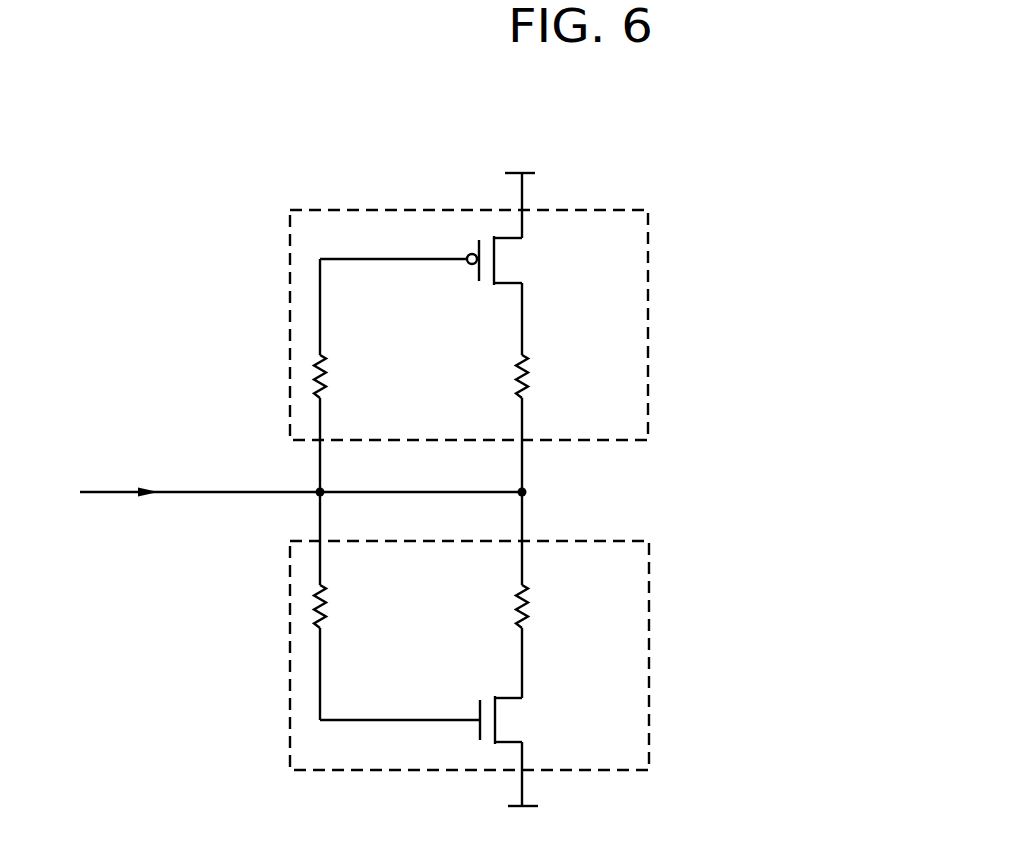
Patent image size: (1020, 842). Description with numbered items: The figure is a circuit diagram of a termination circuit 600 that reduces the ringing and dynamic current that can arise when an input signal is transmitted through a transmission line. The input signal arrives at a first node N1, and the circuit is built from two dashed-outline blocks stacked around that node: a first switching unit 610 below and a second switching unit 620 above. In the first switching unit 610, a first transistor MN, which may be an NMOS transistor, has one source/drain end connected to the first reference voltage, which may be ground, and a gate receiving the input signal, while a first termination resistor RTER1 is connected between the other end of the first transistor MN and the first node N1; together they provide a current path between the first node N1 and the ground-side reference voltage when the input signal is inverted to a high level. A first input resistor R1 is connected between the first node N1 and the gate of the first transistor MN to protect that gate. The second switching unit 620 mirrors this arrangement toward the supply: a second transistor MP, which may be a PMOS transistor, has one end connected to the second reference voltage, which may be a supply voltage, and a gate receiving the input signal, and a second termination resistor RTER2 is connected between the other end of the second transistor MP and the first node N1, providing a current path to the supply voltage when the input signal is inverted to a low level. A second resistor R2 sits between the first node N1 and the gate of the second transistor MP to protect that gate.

The termination circuit 600 is at (464, 470).
The first switching unit 610 is at (527, 655).
The second switching unit 620 is at (526, 325).
The second transistor MP is at (441, 260).
The first transistor MN is at (443, 720).
The first input resistor R1 is at (342, 606).
The second resistor R2 is at (343, 376).
The first termination resistor RTER1 is at (575, 606).
The second termination resistor RTER2 is at (575, 376).
The first node N1 is at (547, 494).